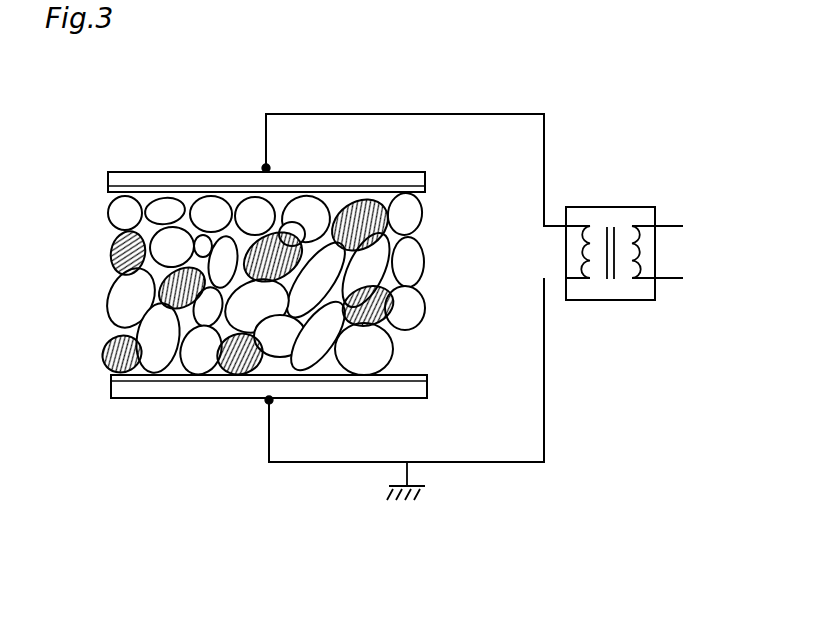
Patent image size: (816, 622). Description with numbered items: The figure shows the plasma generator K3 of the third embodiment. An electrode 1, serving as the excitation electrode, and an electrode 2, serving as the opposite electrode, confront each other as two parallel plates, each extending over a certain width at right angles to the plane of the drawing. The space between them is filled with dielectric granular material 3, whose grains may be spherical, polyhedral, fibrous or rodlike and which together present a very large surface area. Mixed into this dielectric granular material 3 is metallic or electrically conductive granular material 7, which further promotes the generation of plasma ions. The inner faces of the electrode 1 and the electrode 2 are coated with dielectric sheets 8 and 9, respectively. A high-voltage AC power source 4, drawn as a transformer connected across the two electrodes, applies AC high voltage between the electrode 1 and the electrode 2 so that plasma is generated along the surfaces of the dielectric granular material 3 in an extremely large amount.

The electrode 1 is at (117, 182).
The electrode 2 is at (118, 391).
The dielectric granular material 3 is at (113, 213).
The electrically conductive granular material 7 is at (110, 253).
The dielectric sheet 8 is at (110, 195).
The dielectric sheet 9 is at (116, 379).
The high-voltage AC power source 4 is at (615, 302).
The plasma generator K3 is at (448, 80).